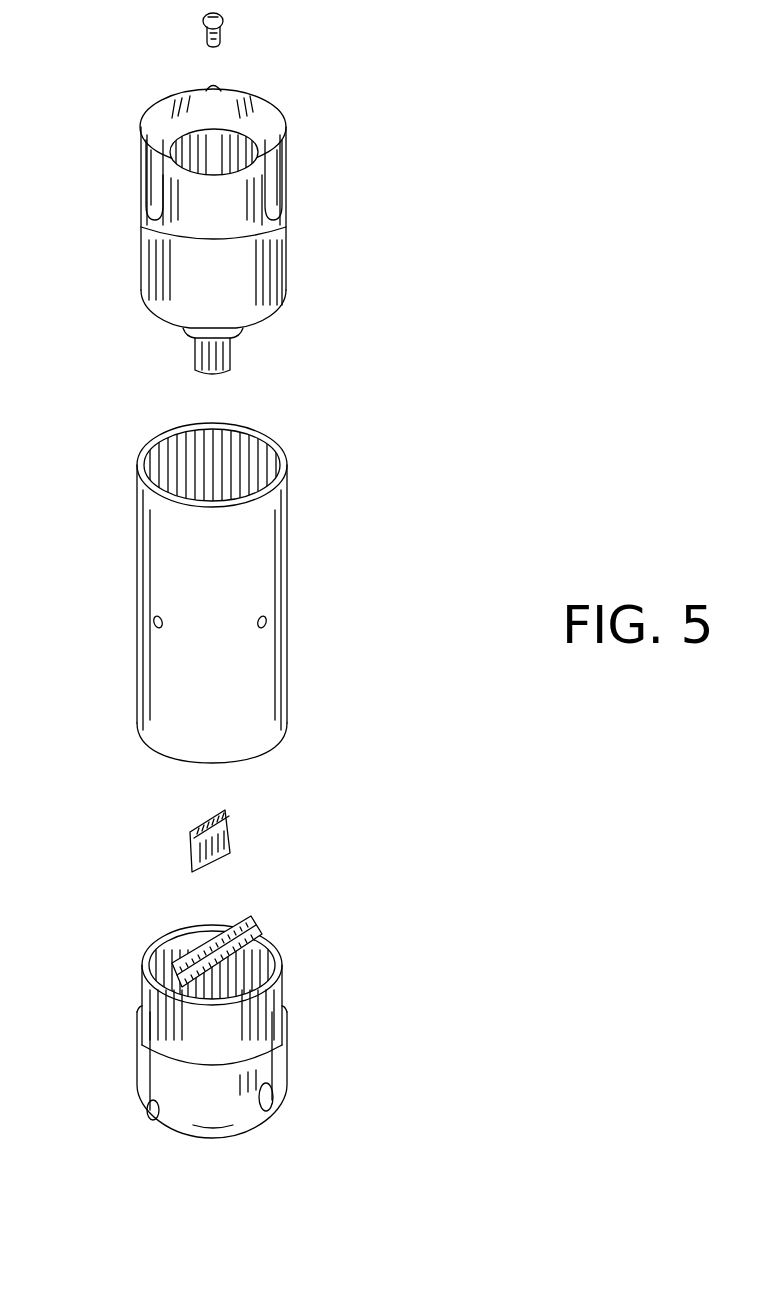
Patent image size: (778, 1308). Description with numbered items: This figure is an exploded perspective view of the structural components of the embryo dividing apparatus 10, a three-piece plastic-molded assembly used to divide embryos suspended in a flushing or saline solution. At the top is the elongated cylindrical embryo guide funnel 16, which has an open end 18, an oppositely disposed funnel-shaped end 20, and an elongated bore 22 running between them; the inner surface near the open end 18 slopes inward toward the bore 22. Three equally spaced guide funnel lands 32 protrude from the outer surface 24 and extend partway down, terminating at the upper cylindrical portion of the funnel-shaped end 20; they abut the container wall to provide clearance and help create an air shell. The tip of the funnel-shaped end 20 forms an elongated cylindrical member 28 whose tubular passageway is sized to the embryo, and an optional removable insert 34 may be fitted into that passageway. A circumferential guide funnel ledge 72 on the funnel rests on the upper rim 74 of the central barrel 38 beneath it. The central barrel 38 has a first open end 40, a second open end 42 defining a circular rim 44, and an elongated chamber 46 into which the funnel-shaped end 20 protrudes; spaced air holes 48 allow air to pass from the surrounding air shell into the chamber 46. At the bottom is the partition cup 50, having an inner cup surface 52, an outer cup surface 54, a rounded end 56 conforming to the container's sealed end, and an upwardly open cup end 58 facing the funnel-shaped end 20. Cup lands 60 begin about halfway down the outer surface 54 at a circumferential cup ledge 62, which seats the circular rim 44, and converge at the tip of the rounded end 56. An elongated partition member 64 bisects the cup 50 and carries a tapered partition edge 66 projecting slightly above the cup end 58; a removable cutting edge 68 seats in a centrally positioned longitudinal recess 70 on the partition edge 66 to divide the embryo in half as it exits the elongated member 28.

The embryo dividing apparatus 10 is at (395, 726).
The embryo guide funnel 16 is at (216, 217).
The open end 18 is at (207, 112).
The funnel-shaped end 20 is at (183, 323).
The elongated bore 22 is at (224, 155).
The outer surface 24 is at (230, 217).
The elongated cylindrical member 28 is at (230, 360).
The guide funnel lands 32 is at (212, 87).
The insert 34 is at (228, 35).
The central barrel 38 is at (207, 597).
The first open end 40 is at (202, 446).
The second open end 42 is at (181, 763).
The circular rim 44 is at (250, 762).
The elongated chamber 46 is at (213, 441).
The air holes 48 is at (150, 633).
The partition cup 50 is at (243, 1043).
The inner cup surface 52 is at (212, 938).
The outer cup surface 54 is at (217, 1047).
The rounded end 56 is at (200, 1138).
The upwardly-open cup end 58 is at (155, 942).
The cup lands 60 is at (153, 1118).
The cup ledge 62 is at (177, 1067).
The partition member 64 is at (261, 929).
The tapered partition edge 66 is at (258, 929).
The cutting edge 68 is at (188, 818).
The longitudinal recess 70 is at (213, 937).
The guide funnel ledge 72 is at (225, 240).
The upper rim 74 is at (283, 447).